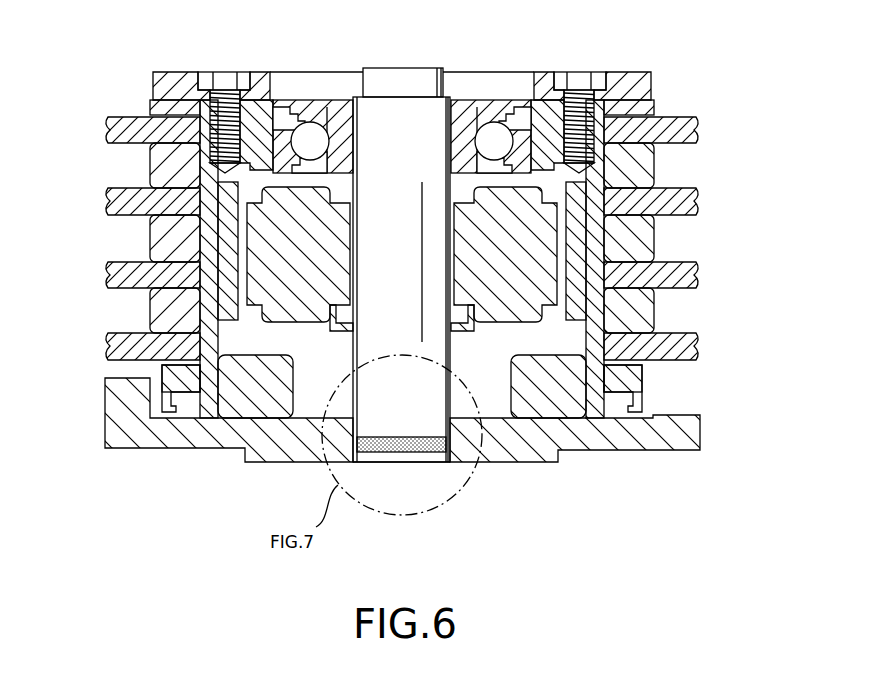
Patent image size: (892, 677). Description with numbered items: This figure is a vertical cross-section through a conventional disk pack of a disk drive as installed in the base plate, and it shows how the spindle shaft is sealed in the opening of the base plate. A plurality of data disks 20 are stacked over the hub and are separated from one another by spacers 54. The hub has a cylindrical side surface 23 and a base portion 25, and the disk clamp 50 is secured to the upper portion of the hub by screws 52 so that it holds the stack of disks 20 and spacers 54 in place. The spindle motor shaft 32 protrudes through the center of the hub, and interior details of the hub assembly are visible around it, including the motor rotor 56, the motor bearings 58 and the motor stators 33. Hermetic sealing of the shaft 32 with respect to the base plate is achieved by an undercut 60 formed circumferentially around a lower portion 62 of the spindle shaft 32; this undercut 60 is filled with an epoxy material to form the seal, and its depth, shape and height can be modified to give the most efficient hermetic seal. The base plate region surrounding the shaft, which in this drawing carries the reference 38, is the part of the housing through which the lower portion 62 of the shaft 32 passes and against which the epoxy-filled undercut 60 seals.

The data disks 20 is at (105, 130).
The cylindrical side surface 23 is at (207, 308).
The base portion 25 is at (168, 375).
The spindle motor shaft 32 is at (405, 128).
The motor stators 33 is at (250, 400).
The base plate 38 is at (171, 450).
The disk clamp 50 is at (165, 83).
The screws 52 is at (228, 78).
The spacers 54 is at (155, 170).
The motor rotor 56 is at (343, 263).
The motor bearings 58 is at (307, 133).
The undercut 60 is at (378, 435).
The lower portion 62 is at (412, 462).